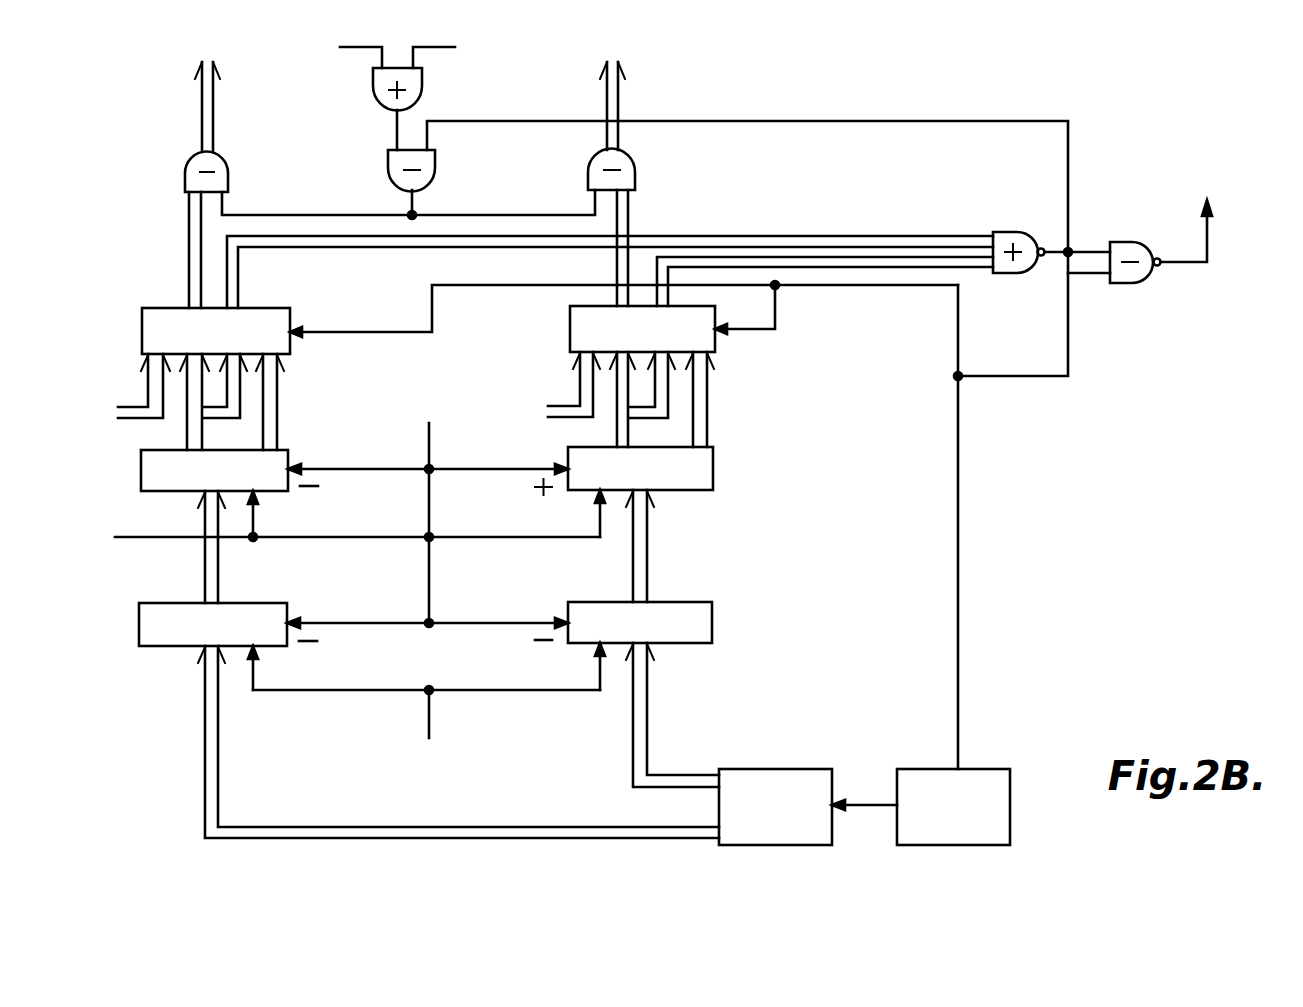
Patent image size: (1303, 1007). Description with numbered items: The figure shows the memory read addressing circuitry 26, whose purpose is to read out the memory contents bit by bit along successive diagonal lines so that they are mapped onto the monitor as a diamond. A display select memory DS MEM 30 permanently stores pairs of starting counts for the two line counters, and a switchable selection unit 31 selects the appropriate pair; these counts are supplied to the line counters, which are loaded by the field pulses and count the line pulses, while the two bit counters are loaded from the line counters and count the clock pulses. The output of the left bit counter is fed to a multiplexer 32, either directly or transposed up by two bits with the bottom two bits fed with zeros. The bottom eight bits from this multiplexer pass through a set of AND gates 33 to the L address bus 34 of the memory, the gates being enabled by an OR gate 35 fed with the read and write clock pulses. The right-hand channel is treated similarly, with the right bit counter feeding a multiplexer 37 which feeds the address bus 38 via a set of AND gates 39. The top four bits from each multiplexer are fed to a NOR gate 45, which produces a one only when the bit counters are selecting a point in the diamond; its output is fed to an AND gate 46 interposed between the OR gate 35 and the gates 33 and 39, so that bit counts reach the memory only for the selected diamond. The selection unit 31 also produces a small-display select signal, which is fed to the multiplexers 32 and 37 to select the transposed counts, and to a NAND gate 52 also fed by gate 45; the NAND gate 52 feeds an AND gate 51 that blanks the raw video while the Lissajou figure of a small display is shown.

The memory read addressing circuitry 26 is at (859, 514).
The display select memory DS MEM 30 is at (823, 769).
The switchable selection unit 31 is at (1003, 769).
The multiplexer 32 is at (142, 331).
The set of AND gates 33 is at (185, 173).
The L address bus 34 is at (200, 97).
The OR gate 35 is at (422, 80).
The multiplexer 37 is at (570, 330).
The address bus 38 is at (620, 97).
The set of AND gates 39 is at (635, 173).
The NOR gate 45 is at (1007, 232).
The AND gate 46 is at (388, 170).
The AND gate 51 is at (1195, 218).
The NAND gate 52 is at (1125, 242).